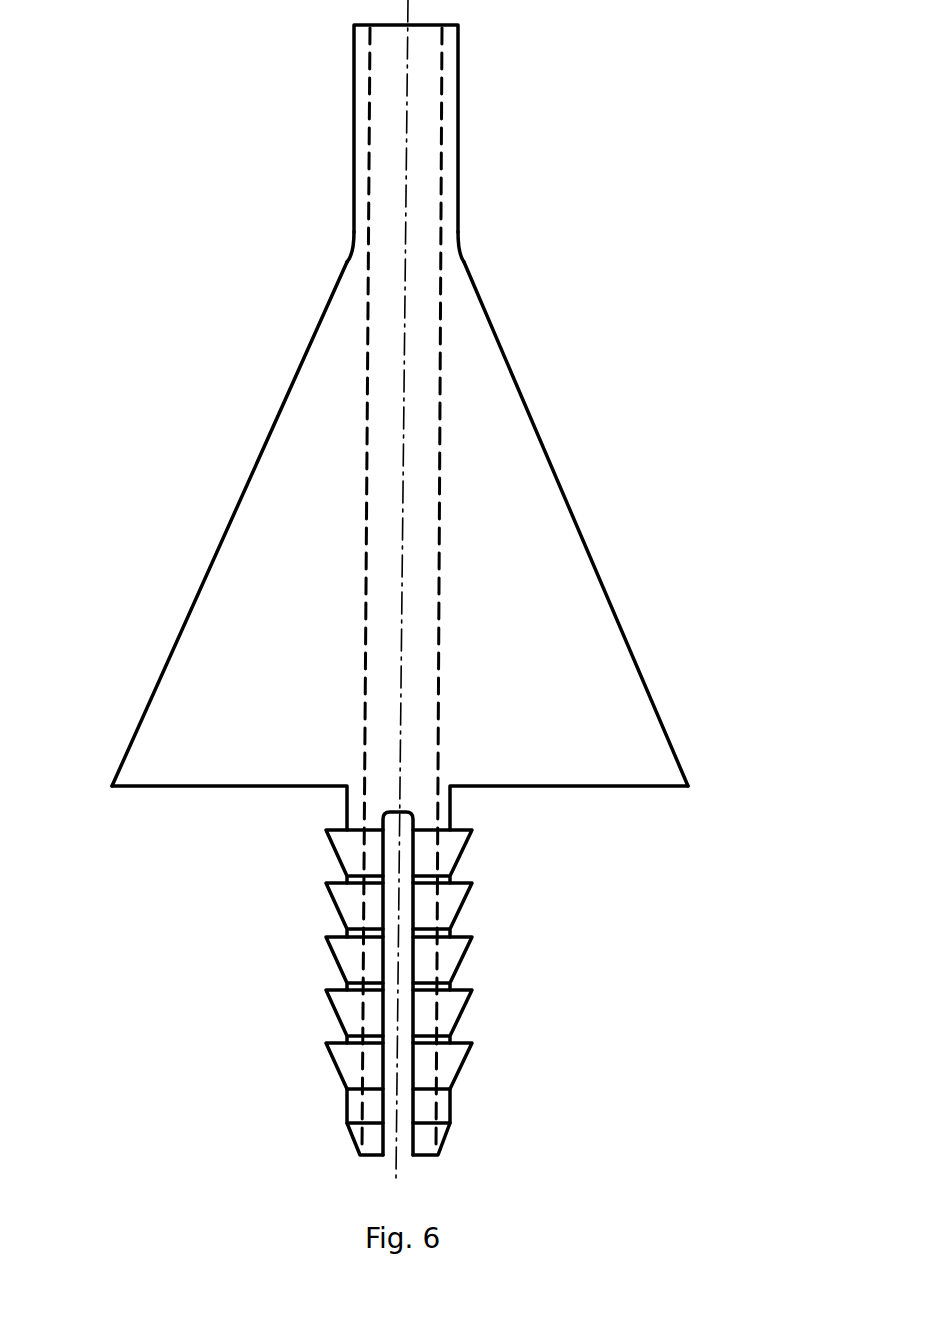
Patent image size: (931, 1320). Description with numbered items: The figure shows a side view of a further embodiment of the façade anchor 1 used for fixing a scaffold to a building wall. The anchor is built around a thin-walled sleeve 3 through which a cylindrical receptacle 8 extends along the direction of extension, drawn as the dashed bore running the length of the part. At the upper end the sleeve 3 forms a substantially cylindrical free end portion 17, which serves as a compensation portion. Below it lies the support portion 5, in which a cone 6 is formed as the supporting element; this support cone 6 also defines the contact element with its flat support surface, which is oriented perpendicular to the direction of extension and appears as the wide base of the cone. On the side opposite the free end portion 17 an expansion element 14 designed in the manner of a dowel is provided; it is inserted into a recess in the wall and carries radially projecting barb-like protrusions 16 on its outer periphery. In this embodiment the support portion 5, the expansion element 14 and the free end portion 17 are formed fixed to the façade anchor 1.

The façade anchor 1 is at (232, 120).
The free end portion 17 is at (540, 126).
The sleeve 3 is at (312, 247).
The support portion 5 is at (604, 476).
The support cone 6 is at (583, 612).
The cylindrical receptacle 8 is at (420, 342).
The expansion element 14 is at (238, 1018).
The barb-like protrusions 16 is at (458, 996).